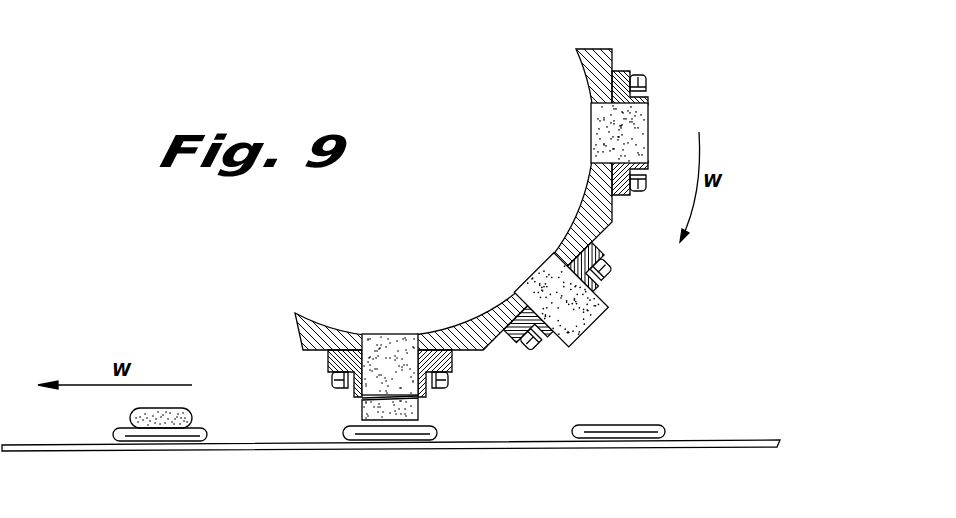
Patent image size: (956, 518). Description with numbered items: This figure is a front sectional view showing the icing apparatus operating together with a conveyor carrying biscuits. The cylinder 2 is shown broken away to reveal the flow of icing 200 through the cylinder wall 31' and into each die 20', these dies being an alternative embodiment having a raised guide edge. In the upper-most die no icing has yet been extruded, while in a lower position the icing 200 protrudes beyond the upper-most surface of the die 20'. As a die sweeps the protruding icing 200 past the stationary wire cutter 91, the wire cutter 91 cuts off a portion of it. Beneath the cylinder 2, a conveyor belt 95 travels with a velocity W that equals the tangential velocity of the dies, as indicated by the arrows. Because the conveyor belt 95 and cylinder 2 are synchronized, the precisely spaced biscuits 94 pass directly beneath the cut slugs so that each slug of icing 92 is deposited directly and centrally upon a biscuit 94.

The cylinder 2 is at (580, 49).
The die 20' is at (489, 209).
The icing 200 is at (640, 117).
The wire cutter 91 is at (420, 400).
The cylinder wall 31' is at (539, 361).
The slug of icing 92 is at (188, 413).
The biscuit 94 is at (183, 441).
The conveyor belt 95 is at (538, 448).